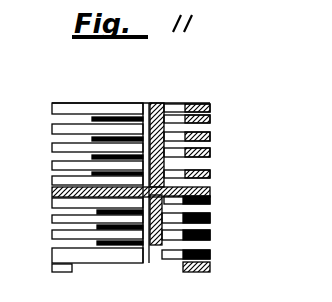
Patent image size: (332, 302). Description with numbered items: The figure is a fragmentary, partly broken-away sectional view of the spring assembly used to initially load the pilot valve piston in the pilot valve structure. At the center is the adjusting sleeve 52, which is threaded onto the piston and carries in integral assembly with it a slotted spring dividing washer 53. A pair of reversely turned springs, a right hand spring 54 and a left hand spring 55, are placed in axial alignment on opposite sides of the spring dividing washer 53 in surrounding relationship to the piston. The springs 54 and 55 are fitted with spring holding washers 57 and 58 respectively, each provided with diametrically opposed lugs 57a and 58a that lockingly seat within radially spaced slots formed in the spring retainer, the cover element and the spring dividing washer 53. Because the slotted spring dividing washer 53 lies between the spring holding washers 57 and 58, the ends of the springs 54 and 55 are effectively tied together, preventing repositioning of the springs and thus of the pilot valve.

The central core member 52 is at (163, 103).
The spring dividing washer 53 is at (52, 191).
The right hand spring 54 is at (52, 239).
The left hand spring 55 is at (52, 148).
The spring holding washer 57 is at (52, 201).
The lugs 57a is at (210, 202).
The spring holding washer 58 is at (176, 104).
The lugs 58a is at (140, 103).